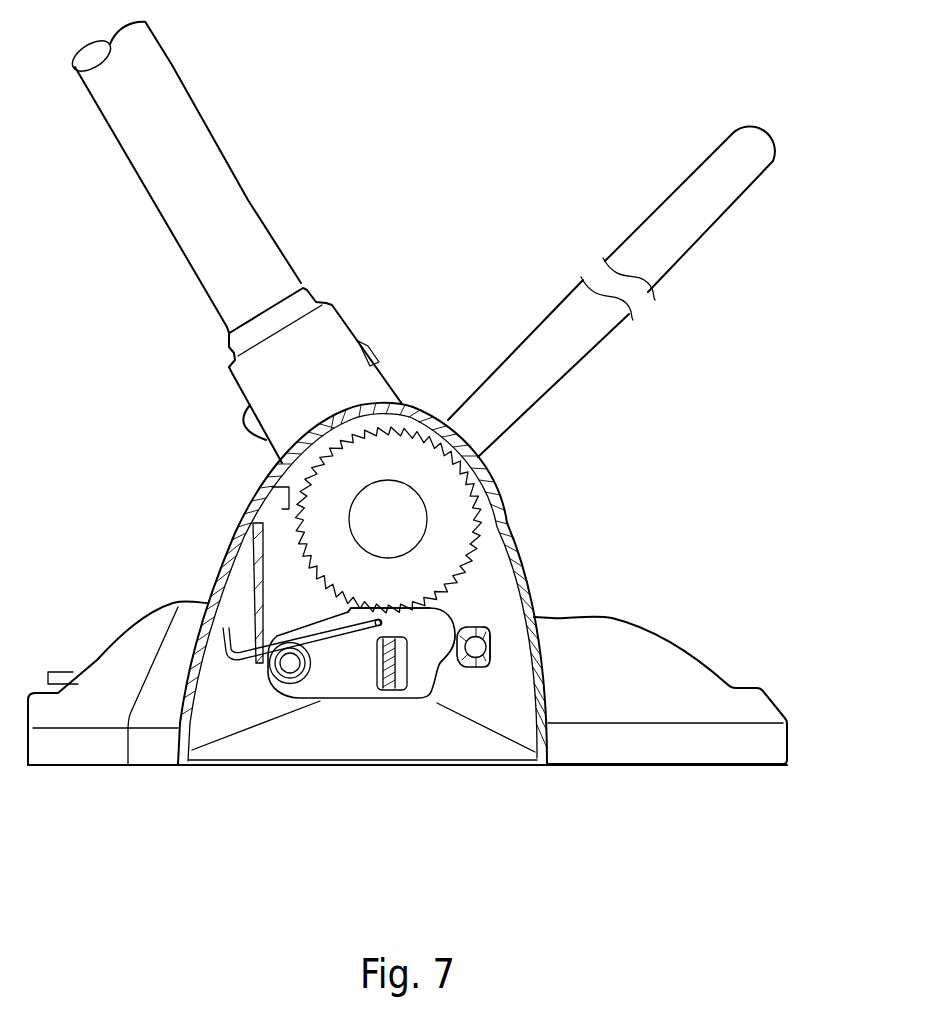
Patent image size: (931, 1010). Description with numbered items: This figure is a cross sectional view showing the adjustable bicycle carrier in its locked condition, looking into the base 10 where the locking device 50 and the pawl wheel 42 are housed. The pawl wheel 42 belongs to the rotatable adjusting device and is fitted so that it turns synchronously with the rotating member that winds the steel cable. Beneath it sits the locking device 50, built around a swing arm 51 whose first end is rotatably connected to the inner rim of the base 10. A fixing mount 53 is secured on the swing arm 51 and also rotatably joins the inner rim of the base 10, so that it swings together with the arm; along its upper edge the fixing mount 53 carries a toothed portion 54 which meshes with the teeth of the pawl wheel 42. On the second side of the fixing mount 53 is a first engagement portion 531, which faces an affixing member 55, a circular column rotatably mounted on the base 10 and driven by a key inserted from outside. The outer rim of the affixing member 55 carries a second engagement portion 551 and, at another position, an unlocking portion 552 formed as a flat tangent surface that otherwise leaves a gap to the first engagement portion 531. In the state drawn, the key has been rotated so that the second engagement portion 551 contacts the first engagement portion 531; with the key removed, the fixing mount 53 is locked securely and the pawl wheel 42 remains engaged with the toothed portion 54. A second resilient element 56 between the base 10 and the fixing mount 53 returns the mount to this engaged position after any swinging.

The base 10 is at (112, 630).
The pawl wheel 42 is at (302, 475).
The locking device 50 is at (570, 828).
The swing arm 51 is at (387, 687).
The fixing mount 53 is at (348, 687).
The toothed portion 54 is at (392, 606).
The affixing member 55 is at (480, 672).
The second resilient element 56 is at (247, 660).
The first engagement portion 531 is at (457, 633).
The second engagement portion 551 is at (550, 580).
The unlocking portion 552 is at (490, 638).